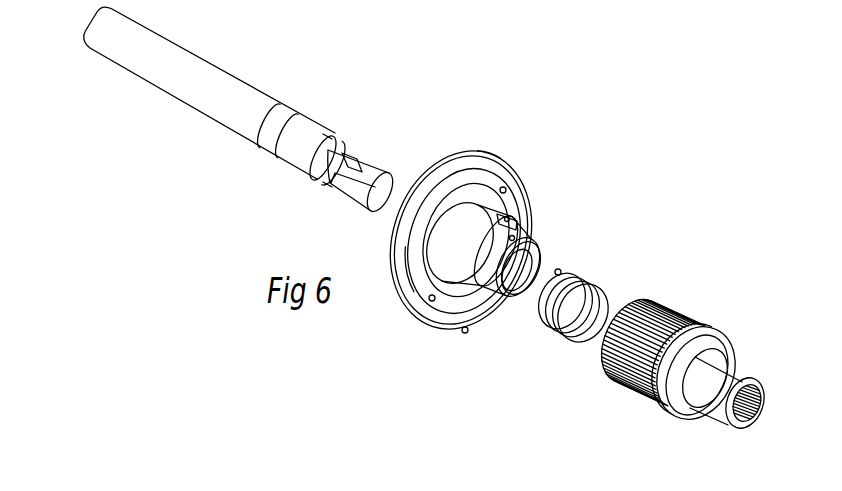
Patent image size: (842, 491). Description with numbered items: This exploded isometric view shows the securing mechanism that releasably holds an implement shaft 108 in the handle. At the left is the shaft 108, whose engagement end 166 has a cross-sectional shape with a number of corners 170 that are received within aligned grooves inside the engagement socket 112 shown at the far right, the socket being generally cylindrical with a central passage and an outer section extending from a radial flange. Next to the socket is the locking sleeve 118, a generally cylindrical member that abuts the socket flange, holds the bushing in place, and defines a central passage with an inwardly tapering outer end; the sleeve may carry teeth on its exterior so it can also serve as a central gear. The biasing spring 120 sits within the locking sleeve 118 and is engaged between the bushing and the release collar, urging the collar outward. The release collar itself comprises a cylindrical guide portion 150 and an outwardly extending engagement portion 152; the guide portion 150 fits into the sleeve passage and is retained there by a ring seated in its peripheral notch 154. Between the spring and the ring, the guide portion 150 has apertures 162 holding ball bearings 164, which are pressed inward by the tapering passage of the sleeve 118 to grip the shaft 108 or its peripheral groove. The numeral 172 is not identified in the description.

The shaft 108 is at (167, 116).
The engagement socket 112 is at (746, 359).
The locking sleeve 118 is at (687, 303).
The biasing spring 120 is at (597, 276).
The guide portion 150 is at (512, 298).
The engagement portion 152 is at (527, 178).
The peripheral notch 154 is at (525, 225).
The apertures 162 is at (520, 233).
The ball bearings 164 is at (463, 333).
The engagement end 166 is at (355, 215).
The corners 170 is at (359, 145).
The rim 172 is at (495, 143).